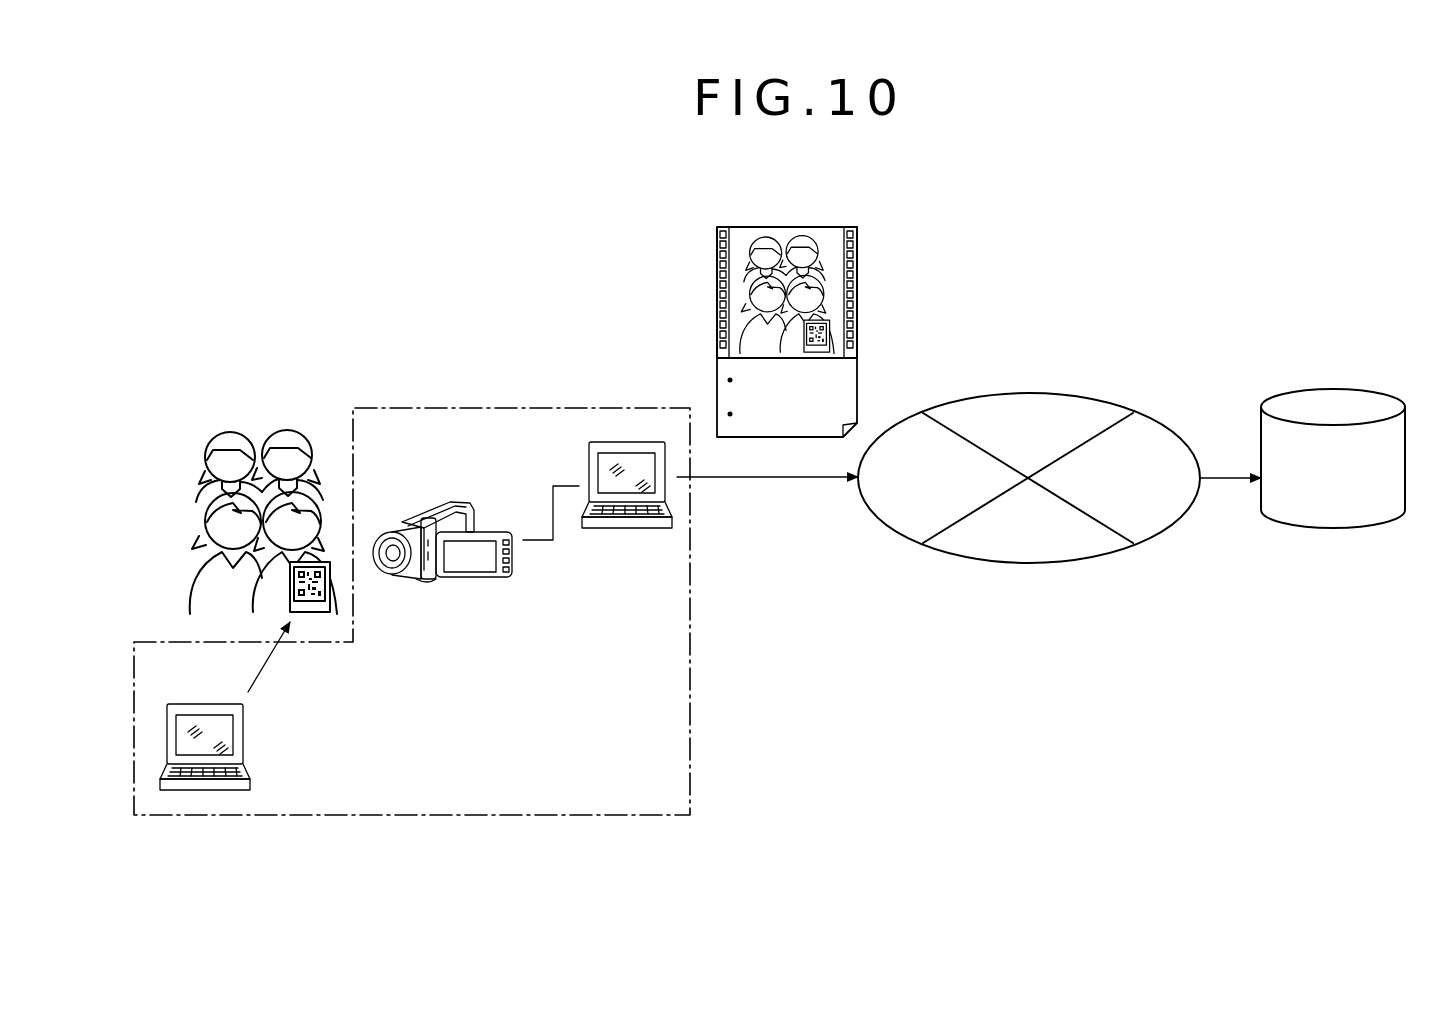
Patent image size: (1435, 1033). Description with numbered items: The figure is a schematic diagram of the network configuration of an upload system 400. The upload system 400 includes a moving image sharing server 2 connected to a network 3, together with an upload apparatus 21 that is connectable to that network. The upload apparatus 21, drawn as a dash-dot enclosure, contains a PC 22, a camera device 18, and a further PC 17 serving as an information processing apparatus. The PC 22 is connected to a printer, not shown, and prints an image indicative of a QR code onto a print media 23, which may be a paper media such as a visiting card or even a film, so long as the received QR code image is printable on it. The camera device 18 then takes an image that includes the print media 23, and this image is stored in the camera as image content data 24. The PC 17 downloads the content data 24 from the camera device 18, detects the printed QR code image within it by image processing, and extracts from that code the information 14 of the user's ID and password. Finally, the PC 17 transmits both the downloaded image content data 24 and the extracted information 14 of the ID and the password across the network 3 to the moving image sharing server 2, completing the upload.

The moving image sharing server 2 is at (1337, 528).
The network 3 is at (1030, 563).
The information of the ID and the password 14 is at (820, 332).
The PC 17 is at (620, 440).
The camera device 18 is at (418, 520).
The upload apparatus 21 is at (518, 408).
The PC 22 is at (243, 735).
The print media 23 is at (315, 612).
The image content data 24 is at (858, 244).
The upload system 400 is at (1093, 268).